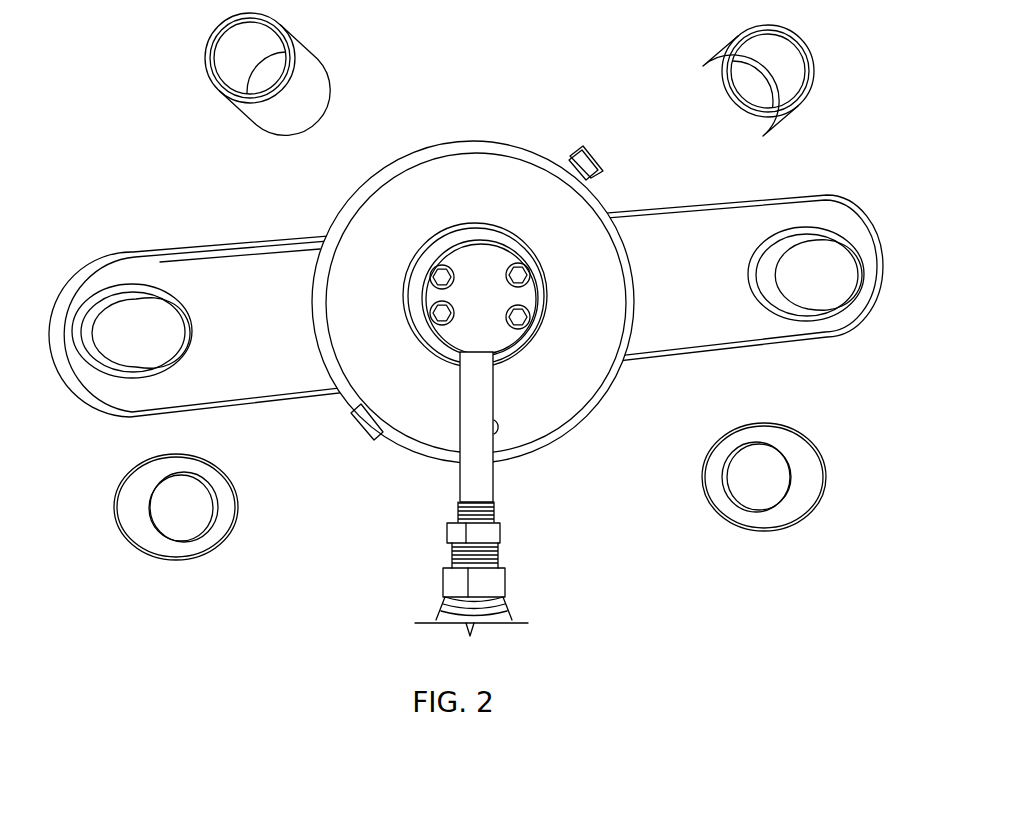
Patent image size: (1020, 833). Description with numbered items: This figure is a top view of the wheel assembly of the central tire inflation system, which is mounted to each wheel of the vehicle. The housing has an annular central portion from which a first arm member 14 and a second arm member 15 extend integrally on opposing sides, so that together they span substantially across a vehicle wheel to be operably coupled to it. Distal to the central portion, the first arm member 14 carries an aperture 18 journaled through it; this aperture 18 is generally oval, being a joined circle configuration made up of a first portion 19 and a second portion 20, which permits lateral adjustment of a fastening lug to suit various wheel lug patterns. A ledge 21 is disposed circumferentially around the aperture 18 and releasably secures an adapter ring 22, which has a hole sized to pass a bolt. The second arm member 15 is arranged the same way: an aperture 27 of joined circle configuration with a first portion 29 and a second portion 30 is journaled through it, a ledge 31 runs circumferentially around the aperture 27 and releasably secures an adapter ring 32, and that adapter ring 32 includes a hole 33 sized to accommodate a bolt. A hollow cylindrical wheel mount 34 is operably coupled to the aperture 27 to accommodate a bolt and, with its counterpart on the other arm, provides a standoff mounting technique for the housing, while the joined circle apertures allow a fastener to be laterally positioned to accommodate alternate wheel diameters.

The first arm member 14 is at (727, 233).
The second arm member 15 is at (238, 288).
The aperture 18 is at (787, 275).
The first portion 19 is at (835, 297).
The second portion 20 is at (778, 285).
The ledge 21 is at (855, 255).
The adapter ring 22 is at (802, 502).
The aperture 27 is at (143, 341).
The first portion 29 is at (105, 360).
The second portion 30 is at (158, 350).
The ledge 31 is at (72, 337).
The adapter ring 32 is at (148, 537).
The hole 33 is at (190, 511).
The wheel mount 34 is at (298, 82).